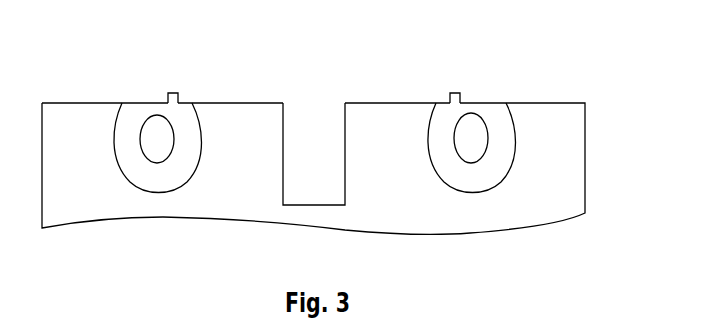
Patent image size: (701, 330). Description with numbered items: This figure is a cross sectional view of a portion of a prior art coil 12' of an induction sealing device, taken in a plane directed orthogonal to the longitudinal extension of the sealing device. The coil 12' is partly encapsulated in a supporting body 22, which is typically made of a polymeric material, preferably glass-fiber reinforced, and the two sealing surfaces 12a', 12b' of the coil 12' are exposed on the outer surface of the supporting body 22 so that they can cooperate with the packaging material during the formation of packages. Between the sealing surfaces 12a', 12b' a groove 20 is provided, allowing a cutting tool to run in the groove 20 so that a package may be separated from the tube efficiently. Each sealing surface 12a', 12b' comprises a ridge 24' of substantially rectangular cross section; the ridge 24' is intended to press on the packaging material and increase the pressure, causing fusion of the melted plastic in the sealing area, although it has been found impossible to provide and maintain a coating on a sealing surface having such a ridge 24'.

The supporting body 22 is at (585, 165).
The groove 20 is at (284, 128).
The ridge 24' is at (314, 67).
The coil 12' is at (313, 108).
The sealing surface 12a' is at (147, 90).
The sealing surface 12b' is at (486, 98).